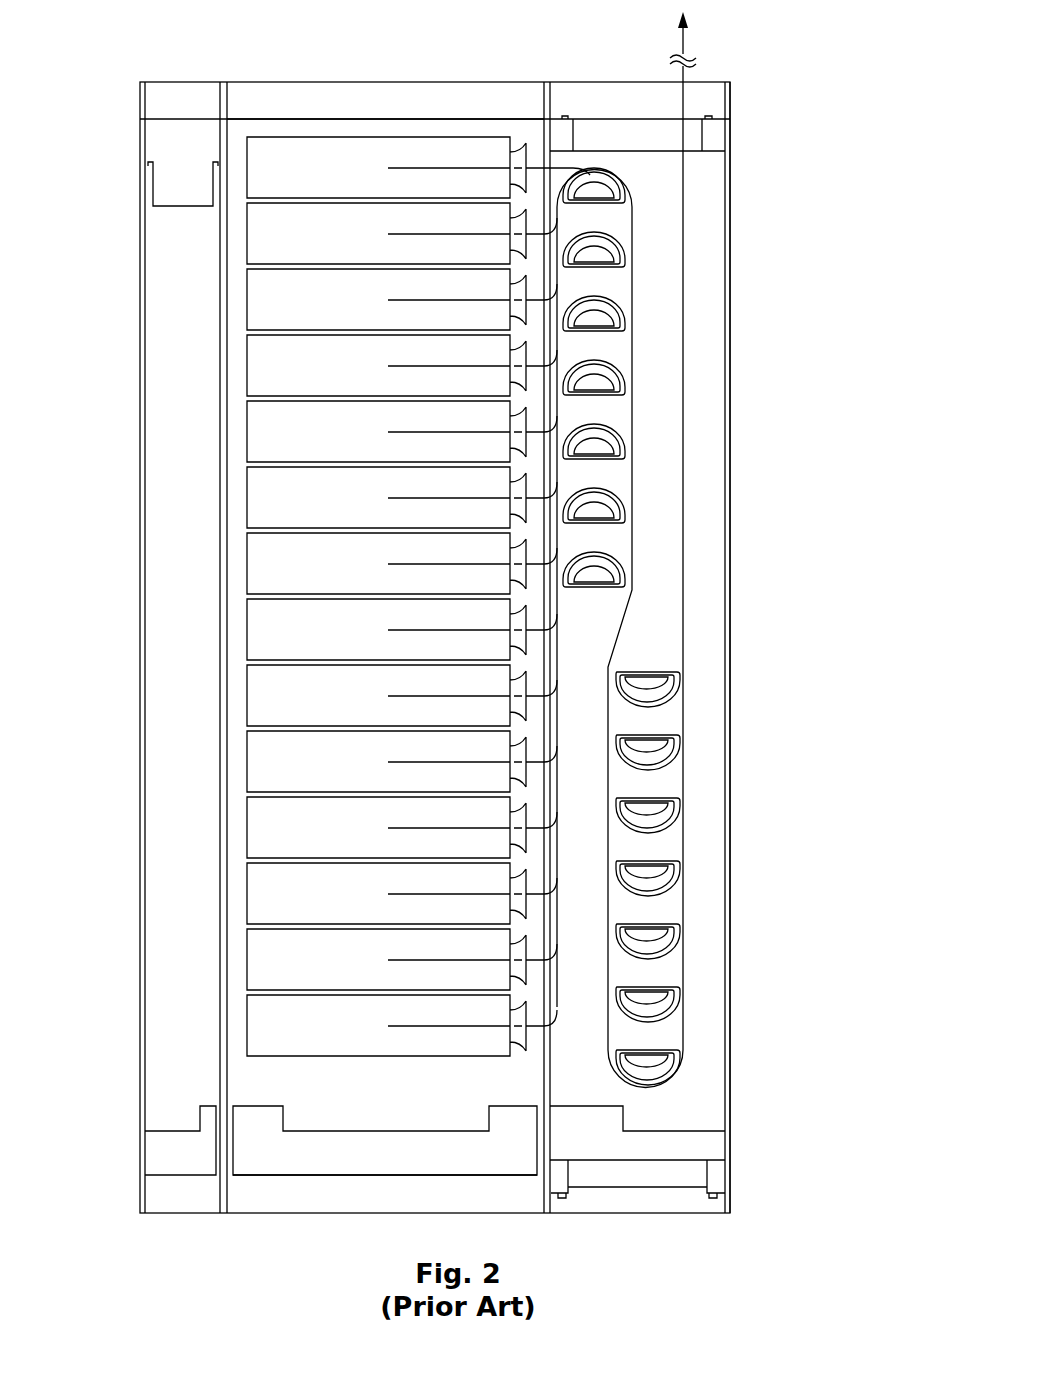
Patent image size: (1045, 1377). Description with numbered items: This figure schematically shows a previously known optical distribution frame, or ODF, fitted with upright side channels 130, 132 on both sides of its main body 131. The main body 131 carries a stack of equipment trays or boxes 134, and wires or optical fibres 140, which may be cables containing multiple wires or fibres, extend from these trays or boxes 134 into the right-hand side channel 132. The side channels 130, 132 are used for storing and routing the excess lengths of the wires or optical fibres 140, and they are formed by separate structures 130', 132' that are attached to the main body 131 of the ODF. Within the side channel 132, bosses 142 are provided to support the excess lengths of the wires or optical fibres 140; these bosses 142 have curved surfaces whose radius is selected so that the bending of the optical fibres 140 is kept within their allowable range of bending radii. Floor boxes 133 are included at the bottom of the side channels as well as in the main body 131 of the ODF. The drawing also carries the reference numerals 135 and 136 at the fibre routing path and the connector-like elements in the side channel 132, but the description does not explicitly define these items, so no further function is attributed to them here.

The side channel 130 is at (394, 647).
The structure forming side channel 130' is at (135, 647).
The main body of the ODF 131 is at (385, 113).
The side channel 132 is at (669, 647).
The structure forming side channel 132' is at (676, 672).
The floor box 133 is at (197, 1160).
The equipment tray or box 134 is at (257, 310).
The vertical cable path 135 is at (672, 625).
The connectors 136 is at (631, 199).
The wires or optical fibres 140 is at (682, 167).
The boss 142 is at (631, 391).